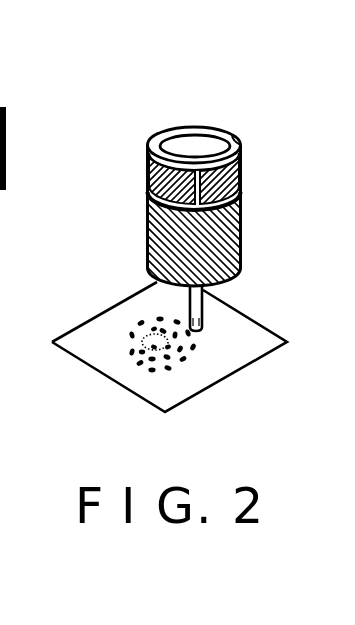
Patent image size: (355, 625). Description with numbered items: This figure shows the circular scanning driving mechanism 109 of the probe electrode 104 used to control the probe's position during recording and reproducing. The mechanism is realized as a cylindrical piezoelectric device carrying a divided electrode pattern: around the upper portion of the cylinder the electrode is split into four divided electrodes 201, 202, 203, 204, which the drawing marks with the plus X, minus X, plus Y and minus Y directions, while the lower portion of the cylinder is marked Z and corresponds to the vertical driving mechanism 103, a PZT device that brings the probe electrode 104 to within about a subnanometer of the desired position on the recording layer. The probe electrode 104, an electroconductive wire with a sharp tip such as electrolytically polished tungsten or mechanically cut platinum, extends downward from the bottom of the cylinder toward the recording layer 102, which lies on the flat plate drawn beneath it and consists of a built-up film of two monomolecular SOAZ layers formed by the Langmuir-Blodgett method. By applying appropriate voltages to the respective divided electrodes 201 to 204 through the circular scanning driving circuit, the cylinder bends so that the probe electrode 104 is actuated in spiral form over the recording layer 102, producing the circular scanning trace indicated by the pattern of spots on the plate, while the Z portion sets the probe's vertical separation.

The recording layer 102 is at (245, 333).
The vertical driving mechanism 103 is at (240, 218).
The probe electrode 104 is at (158, 287).
The circular scanning driving mechanism 109 is at (193, 127).
The divided electrode 201 is at (147, 215).
The divided electrode 202 is at (243, 132).
The divided electrode 203 is at (243, 181).
The divided electrode 204 is at (163, 137).
The Z electrode Z is at (242, 250).